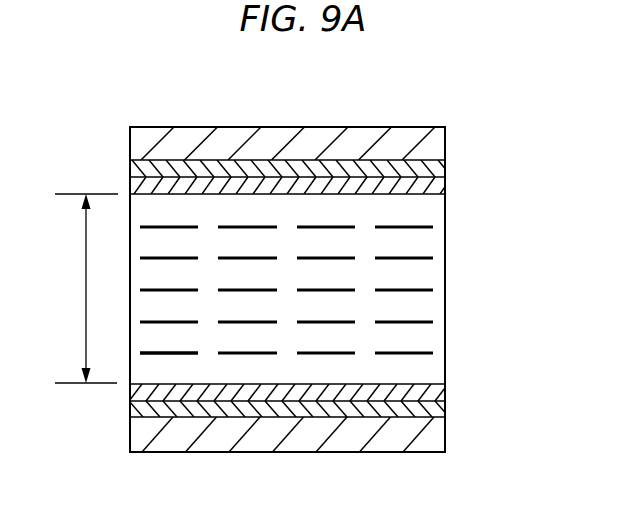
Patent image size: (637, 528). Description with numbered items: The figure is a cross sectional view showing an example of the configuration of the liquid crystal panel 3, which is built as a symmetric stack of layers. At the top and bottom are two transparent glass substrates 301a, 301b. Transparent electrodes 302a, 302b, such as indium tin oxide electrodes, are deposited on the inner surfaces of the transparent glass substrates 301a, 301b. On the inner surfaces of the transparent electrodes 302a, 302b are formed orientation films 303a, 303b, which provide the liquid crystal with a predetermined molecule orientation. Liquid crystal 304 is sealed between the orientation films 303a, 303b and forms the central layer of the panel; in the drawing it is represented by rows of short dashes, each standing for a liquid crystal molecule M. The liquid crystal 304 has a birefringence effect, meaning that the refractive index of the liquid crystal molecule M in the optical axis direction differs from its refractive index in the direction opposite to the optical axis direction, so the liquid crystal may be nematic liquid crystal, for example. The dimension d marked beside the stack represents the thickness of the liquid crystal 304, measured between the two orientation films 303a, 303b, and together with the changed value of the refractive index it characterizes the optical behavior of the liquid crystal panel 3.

The liquid crystal panel 3 is at (378, 116).
The transparent glass substrate 301a is at (432, 133).
The transparent electrode 302a is at (430, 170).
The orientation film 303a is at (437, 187).
The liquid crystal 304 is at (458, 195).
The orientation film 303b is at (430, 393).
The transparent electrode 302b is at (430, 408).
The transparent glass substrate 301b is at (430, 442).
The thickness of the liquid crystal d is at (86, 288).
The liquid crystal molecule M is at (167, 353).